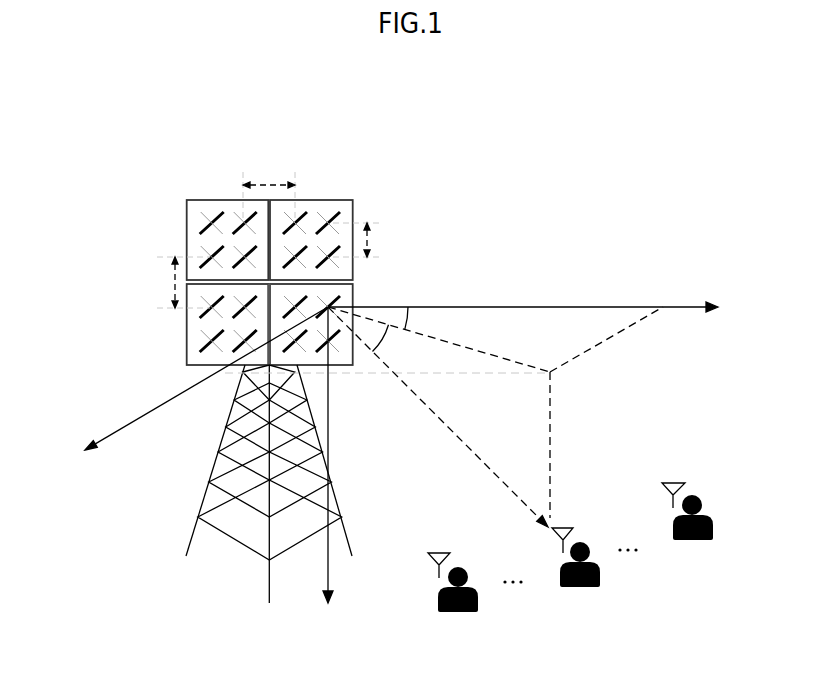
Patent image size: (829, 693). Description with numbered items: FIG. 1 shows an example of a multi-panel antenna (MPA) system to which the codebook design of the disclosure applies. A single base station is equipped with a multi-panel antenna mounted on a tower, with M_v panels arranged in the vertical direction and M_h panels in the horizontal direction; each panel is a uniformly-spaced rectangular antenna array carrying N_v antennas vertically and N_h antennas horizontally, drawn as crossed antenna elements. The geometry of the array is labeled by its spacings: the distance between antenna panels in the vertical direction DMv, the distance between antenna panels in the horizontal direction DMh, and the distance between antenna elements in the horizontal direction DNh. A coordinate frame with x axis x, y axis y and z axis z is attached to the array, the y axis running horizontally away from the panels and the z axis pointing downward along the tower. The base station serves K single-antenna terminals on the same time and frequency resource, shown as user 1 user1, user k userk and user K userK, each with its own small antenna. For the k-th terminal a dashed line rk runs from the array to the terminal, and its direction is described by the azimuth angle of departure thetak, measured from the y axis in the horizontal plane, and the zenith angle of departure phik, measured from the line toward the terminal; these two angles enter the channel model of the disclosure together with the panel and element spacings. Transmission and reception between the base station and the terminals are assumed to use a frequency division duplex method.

The distance between antenna panels in a vertical direction DMv is at (269, 184).
The distance between antenna elements in a horizontal direction DNh is at (381, 240).
The distance between antenna panels in a horizontal direction DMh is at (164, 282).
The x axis x is at (206, 378).
The y axis y is at (523, 292).
The z axis z is at (317, 455).
The distance to the k-th terminal rk is at (438, 417).
The azimuth angle of departure thetak is at (433, 324).
The zenith angle of departure phik is at (399, 347).
The first terminal user1 is at (461, 596).
The k-th terminal userk is at (582, 571).
The K-th terminal userK is at (696, 526).